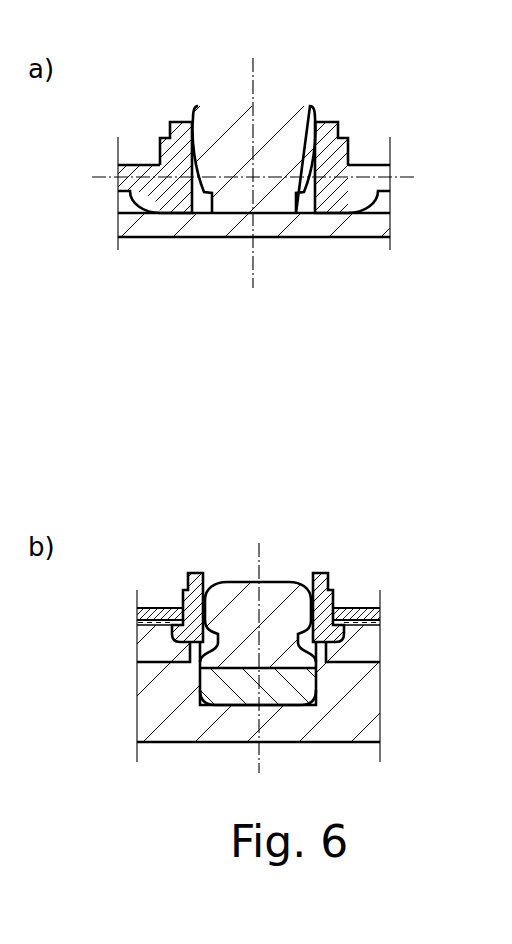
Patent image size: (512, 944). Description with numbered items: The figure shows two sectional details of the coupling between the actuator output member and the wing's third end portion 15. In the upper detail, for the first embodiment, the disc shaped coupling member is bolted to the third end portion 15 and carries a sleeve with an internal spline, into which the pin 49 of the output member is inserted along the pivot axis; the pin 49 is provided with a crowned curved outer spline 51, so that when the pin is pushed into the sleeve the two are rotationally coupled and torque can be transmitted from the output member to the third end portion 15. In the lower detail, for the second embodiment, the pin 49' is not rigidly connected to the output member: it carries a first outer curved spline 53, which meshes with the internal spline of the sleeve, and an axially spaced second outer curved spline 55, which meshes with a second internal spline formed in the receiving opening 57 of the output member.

The third end portion 15 is at (372, 645).
The pin 49 is at (256, 472).
The pin 49' is at (256, 472).
The curved outer spline 51 is at (187, 127).
The first outer curved spline 53 is at (208, 596).
The second outer curved spline 55 is at (200, 670).
The receiving opening 57 is at (207, 702).